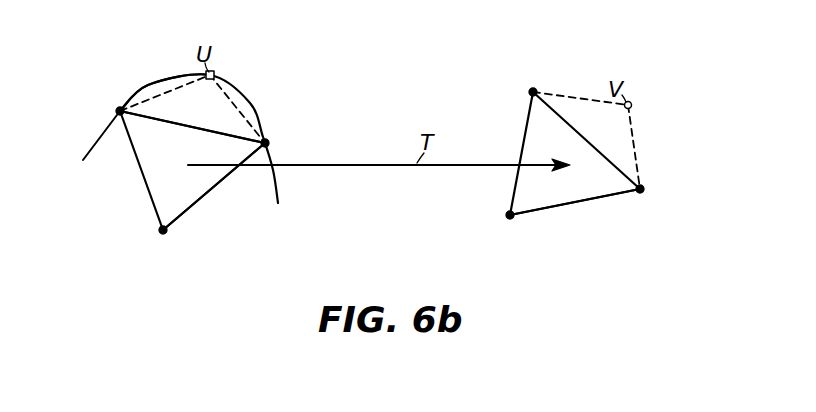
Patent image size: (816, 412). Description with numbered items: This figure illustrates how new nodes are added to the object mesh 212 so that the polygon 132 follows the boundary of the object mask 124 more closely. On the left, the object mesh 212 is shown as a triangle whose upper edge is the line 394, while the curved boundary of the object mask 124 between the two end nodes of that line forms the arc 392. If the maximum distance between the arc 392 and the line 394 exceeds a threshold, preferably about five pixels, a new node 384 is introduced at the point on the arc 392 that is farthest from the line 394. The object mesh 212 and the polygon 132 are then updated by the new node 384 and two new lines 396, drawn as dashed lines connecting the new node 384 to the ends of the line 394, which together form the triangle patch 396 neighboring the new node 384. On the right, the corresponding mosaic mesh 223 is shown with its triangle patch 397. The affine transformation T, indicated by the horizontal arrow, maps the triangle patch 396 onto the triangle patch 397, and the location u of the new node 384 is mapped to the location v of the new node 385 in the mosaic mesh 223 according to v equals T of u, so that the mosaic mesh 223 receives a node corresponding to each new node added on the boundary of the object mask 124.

The object mask 124 is at (95, 142).
The polygon 132 is at (252, 101).
The object mesh 212 is at (152, 174).
The mosaic mesh 223 is at (596, 188).
The new node 384 is at (215, 74).
The new node on the mosaic mesh 385 is at (632, 106).
The arc 392 is at (148, 85).
The line 394 is at (262, 130).
The new lines 396 is at (215, 186).
The triangle patch 397 is at (540, 212).